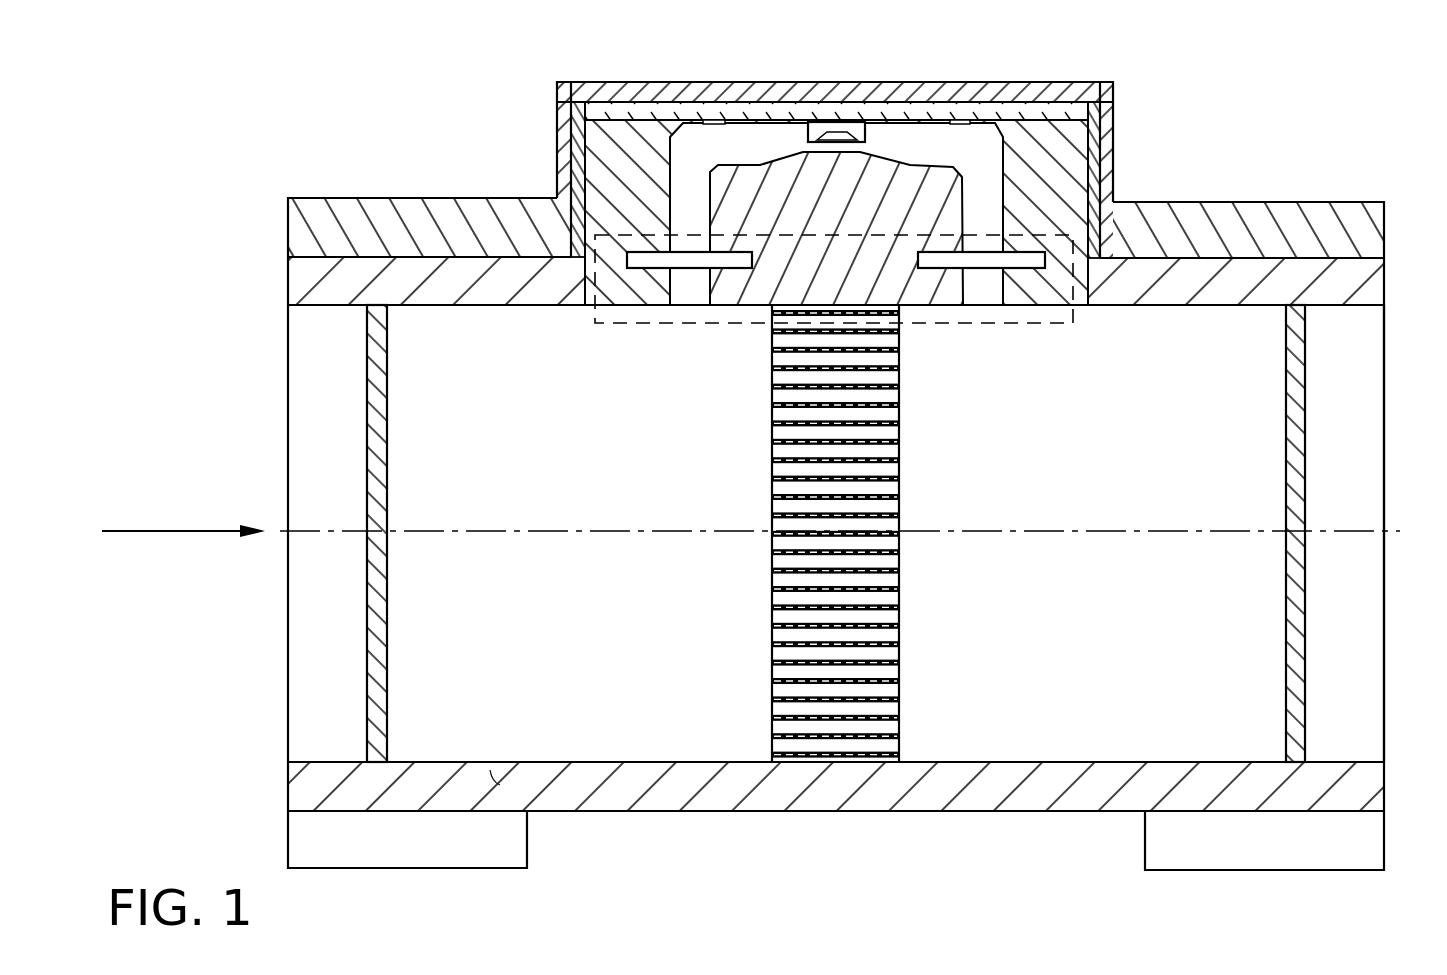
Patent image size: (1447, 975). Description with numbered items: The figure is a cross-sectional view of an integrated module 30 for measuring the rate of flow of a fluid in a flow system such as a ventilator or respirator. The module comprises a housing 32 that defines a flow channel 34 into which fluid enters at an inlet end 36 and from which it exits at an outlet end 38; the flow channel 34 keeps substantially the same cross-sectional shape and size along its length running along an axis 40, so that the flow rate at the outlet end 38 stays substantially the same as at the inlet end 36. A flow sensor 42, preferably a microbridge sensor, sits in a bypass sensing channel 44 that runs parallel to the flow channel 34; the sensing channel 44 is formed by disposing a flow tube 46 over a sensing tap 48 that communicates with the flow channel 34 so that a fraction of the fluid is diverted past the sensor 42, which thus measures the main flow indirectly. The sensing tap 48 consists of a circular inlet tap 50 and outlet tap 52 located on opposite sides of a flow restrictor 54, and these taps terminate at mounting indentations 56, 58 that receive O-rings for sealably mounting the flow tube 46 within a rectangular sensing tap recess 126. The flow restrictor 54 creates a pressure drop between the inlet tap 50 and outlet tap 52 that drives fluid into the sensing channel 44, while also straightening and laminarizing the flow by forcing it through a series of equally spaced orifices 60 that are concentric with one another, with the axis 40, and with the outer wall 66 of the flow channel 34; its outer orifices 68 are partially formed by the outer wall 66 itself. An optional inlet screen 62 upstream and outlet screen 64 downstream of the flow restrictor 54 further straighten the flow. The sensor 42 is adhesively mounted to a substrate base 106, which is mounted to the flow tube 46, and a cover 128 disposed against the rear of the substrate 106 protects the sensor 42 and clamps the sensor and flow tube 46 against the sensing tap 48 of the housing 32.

The integrated module 30 is at (1342, 70).
The housing 32 is at (330, 284).
The flow channel 34 is at (520, 527).
The inlet end 36 is at (340, 706).
The outlet end 38 is at (1357, 719).
The axis 40 is at (1170, 537).
The flow sensor 42 is at (865, 133).
The bypass sensing channel 44 is at (711, 161).
The flow tube 46 is at (617, 213).
The sensing tap 48 is at (1052, 327).
The inlet tap 50 is at (683, 305).
The outlet tap 52 is at (995, 305).
The flow restrictor 54 is at (841, 533).
The mounting indentation 56 is at (627, 266).
The mounting indentation 58 is at (945, 266).
The orifices 60 is at (770, 468).
The inlet screen 62 is at (388, 407).
The outlet screen 64 is at (1285, 427).
The outer wall 66 is at (1364, 396).
The outer orifices 68 is at (847, 308).
The substrate base 106 is at (1070, 122).
The sensing tap recess 126 is at (584, 192).
The cover 128 is at (1066, 86).